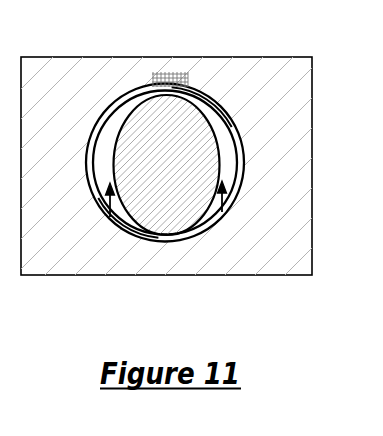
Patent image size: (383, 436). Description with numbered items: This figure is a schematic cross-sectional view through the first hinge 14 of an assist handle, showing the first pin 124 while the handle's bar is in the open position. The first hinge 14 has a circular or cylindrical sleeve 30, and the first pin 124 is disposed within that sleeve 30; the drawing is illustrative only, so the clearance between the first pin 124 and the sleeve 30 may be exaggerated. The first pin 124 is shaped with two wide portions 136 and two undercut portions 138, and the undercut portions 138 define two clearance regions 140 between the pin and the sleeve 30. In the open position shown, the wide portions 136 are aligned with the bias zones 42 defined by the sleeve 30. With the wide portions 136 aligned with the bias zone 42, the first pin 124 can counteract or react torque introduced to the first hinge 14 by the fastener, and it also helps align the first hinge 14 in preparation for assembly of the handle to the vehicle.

The first hinge 14 is at (269, 70).
The sleeve 30 is at (155, 240).
The bias zone 42 is at (169, 78).
The first pin 124 is at (126, 101).
The wide portion 136 is at (172, 99).
The undercut portion 138 is at (123, 163).
The clearance region 140 is at (109, 217).